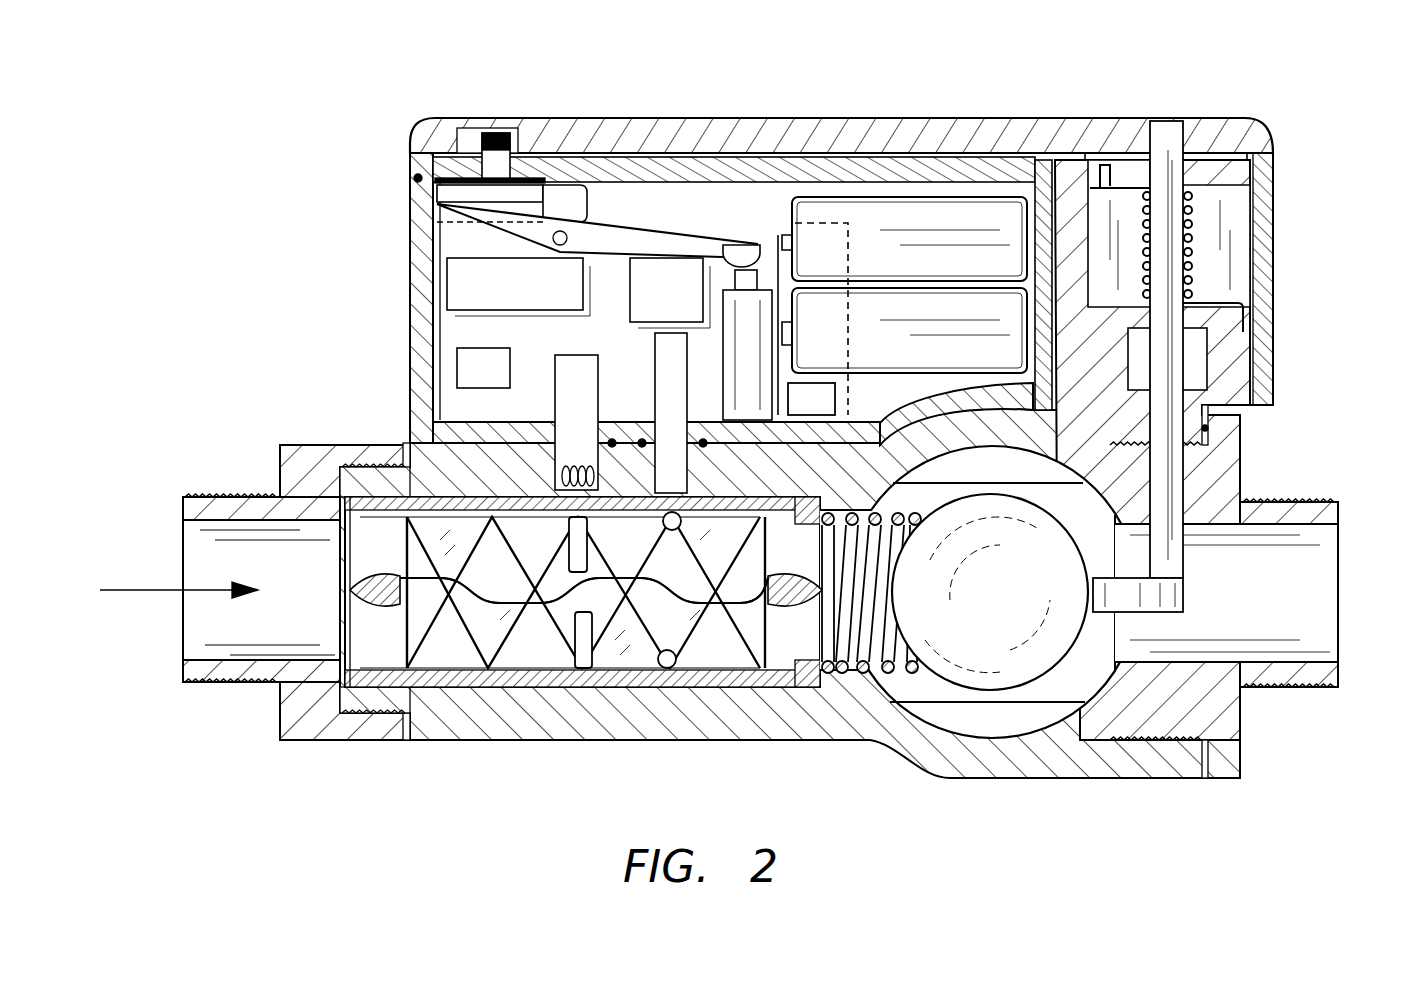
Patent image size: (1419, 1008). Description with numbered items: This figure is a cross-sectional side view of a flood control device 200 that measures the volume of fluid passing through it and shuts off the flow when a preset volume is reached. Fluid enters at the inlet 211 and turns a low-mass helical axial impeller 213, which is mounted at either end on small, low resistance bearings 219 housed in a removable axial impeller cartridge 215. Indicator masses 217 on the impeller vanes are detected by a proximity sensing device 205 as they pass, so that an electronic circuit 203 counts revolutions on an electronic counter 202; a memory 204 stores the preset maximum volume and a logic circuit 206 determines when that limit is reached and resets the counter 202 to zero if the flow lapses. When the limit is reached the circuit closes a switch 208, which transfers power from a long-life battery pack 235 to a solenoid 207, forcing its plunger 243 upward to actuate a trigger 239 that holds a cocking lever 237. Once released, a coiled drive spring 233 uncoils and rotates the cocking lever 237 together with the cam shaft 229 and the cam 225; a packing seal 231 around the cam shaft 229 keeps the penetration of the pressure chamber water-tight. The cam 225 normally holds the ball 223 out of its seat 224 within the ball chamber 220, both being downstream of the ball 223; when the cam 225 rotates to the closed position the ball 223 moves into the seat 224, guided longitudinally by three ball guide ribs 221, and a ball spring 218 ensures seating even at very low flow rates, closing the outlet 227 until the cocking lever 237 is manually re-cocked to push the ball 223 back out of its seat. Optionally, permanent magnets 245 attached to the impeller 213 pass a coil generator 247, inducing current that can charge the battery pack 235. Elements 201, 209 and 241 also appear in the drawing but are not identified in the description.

The flood control device 200 is at (1192, 78).
The electronics housing 201 is at (416, 238).
The electronic counter 202 is at (458, 277).
The electronic circuit 203 is at (455, 337).
The memory 204 is at (685, 290).
The proximity sensing device 205 is at (667, 390).
The logic circuit 206 is at (465, 373).
The solenoid 207 is at (760, 318).
The switch 208 is at (812, 392).
The inlet nut 209 is at (322, 445).
The inlet 211 is at (206, 560).
The axial impeller 213 is at (366, 737).
The axial impeller cartridge 215 is at (475, 690).
The indicator masses 217 is at (648, 690).
The ball spring 218 is at (862, 690).
The bearings 219 is at (788, 690).
The ball chamber 220 is at (1043, 688).
The ball guide ribs 221 is at (955, 718).
The ball 223 is at (1068, 660).
The seat 224 is at (1250, 688).
The cam 225 is at (1188, 604).
The outlet 227 is at (1298, 572).
The cam shaft 229 is at (1168, 490).
The packing seal 231 is at (1200, 375).
The drive spring 233 is at (1193, 243).
The long-life battery pack 235 is at (947, 318).
The cocking lever 237 is at (700, 118).
The trigger 239 is at (495, 132).
The button bar 241 is at (416, 178).
The plunger 243 is at (758, 262).
The permanent magnets 245 is at (580, 690).
The coil generator 247 is at (566, 424).